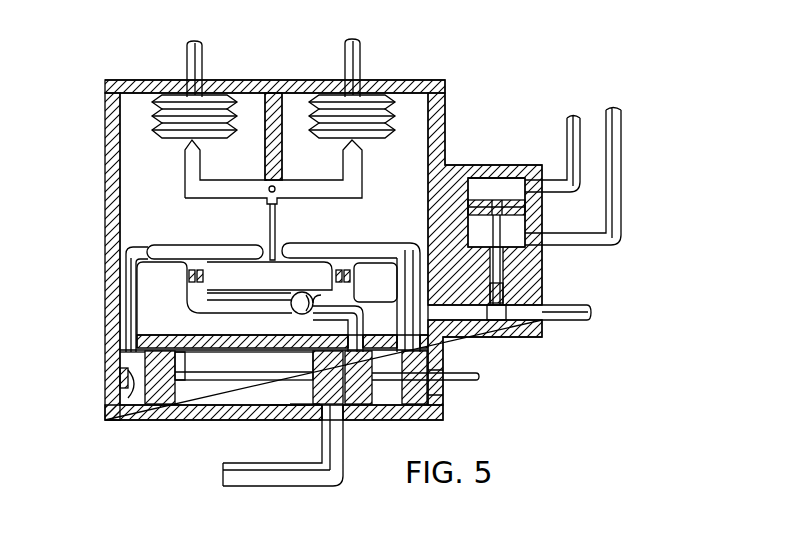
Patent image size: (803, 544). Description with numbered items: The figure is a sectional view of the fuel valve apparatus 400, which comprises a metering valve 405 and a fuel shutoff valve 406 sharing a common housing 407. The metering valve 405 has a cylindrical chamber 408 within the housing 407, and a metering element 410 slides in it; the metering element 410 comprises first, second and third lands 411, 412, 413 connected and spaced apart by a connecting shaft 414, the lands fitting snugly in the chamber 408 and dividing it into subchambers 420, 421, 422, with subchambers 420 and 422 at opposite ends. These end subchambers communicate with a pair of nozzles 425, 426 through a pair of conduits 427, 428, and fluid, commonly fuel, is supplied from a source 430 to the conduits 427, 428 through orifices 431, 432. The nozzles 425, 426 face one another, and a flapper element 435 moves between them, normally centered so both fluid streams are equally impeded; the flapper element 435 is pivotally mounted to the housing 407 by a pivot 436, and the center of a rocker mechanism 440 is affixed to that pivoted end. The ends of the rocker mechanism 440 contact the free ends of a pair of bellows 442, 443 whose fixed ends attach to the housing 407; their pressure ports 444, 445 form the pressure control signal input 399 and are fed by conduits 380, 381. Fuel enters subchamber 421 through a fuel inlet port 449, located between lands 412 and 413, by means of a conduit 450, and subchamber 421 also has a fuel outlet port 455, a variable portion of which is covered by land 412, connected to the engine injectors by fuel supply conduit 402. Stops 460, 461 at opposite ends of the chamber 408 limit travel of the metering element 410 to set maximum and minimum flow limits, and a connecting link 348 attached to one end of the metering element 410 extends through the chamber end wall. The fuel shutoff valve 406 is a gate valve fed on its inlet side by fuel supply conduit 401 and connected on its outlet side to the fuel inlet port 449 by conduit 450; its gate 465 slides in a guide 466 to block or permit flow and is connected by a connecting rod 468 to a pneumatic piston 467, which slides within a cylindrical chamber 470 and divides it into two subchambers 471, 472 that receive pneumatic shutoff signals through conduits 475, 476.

The control signal input 399 is at (252, 29).
The fuel valve apparatus 400 is at (117, 493).
The metering valve 405 is at (82, 383).
The housing 407 is at (447, 114).
The conduit 380 is at (187, 54).
The conduit 381 is at (361, 56).
The pressure port 444 is at (205, 97).
The pressure port 445 is at (337, 96).
The bellows 442 is at (178, 140).
The bellows 443 is at (372, 140).
The rocker mechanism 440 is at (364, 190).
The pivot 436 is at (276, 189).
The flapper element 435 is at (269, 266).
The nozzle 425 is at (258, 247).
The nozzle 426 is at (285, 245).
The conduit 427 is at (185, 243).
The conduit 428 is at (348, 243).
The orifice 431 is at (188, 274).
The orifice 432 is at (356, 276).
The source 430 is at (318, 275).
The fuel inlet port 449 is at (330, 333).
The conduit 450 is at (358, 306).
The stop 461 is at (420, 367).
The cylindrical chamber 408 is at (222, 400).
The first land 411 is at (158, 406).
The second land 412 is at (340, 406).
The third land 413 is at (420, 410).
The connecting shaft 414 is at (195, 406).
The subchamber 421 is at (362, 406).
The subchamber 422 is at (424, 395).
The metering element 410 is at (288, 418).
The fuel outlet port 455 is at (300, 392).
The subchamber 420 is at (127, 362).
The stop 460 is at (116, 405).
The connecting link 348 is at (468, 382).
The fuel supply conduit 402 is at (290, 489).
The fuel supply conduit 401 is at (582, 304).
The fuel shutoff valve 406 is at (480, 122).
The cylindrical chamber 470 is at (482, 181).
The subchamber 471 is at (508, 185).
The pneumatic piston 467 is at (528, 203).
The connecting rod 468 is at (528, 220).
The subchamber 472 is at (503, 242).
The gate 465 is at (503, 274).
The guide 466 is at (496, 321).
The conduit 475 is at (578, 127).
The conduit 476 is at (622, 125).